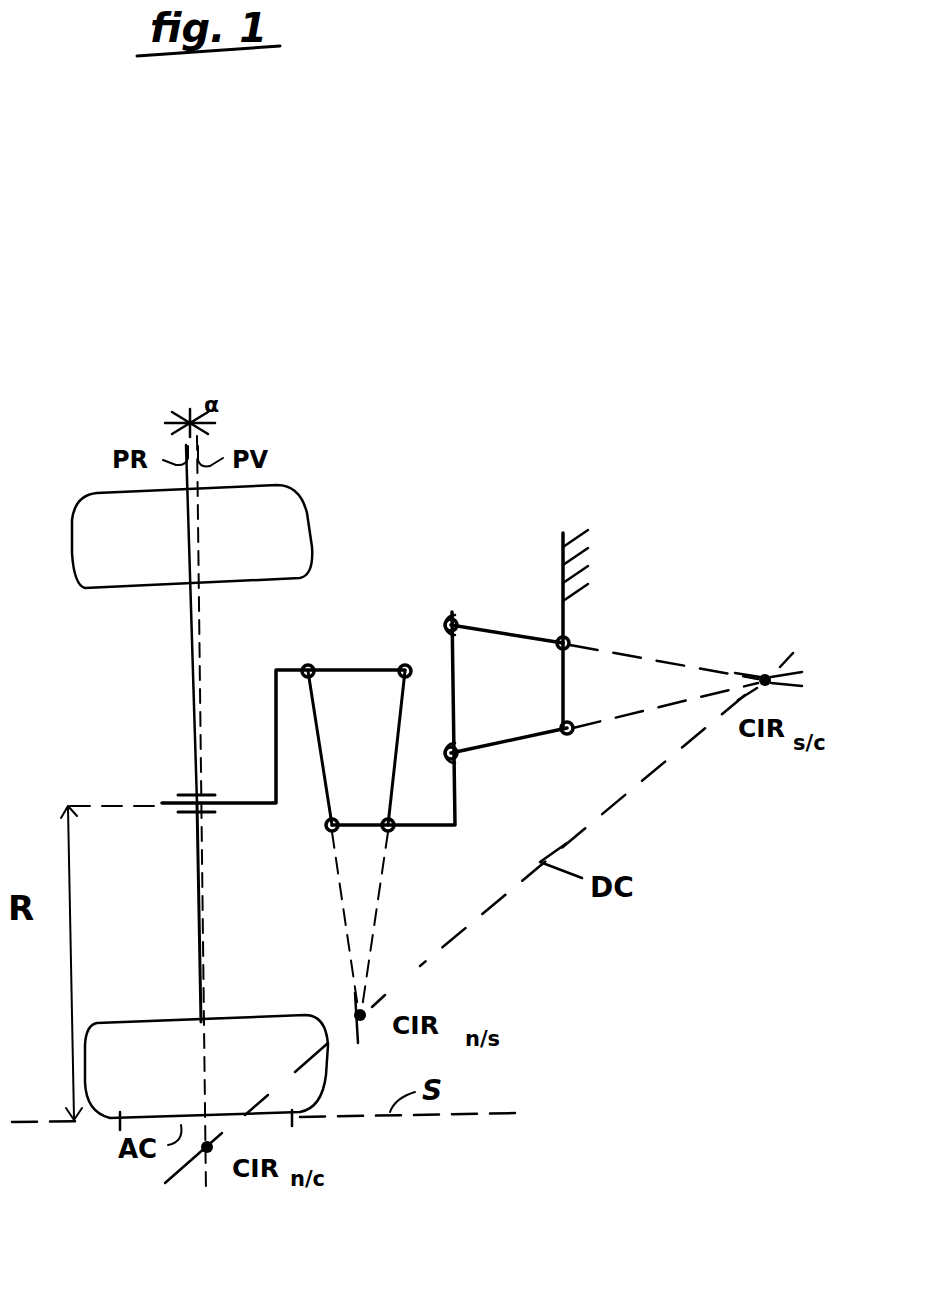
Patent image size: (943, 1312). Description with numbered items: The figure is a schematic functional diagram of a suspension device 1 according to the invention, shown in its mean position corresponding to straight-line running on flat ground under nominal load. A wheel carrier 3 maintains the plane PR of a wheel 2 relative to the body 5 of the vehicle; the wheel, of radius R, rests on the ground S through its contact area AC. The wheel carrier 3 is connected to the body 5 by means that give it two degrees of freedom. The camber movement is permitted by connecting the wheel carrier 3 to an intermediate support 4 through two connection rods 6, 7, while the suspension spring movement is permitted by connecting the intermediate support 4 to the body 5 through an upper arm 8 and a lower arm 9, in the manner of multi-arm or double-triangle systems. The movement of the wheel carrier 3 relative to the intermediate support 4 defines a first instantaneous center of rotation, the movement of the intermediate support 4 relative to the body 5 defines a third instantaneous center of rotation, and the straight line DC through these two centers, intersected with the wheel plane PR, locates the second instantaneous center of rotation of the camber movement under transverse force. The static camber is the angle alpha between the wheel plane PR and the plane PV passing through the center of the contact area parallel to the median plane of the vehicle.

The suspension device 1 is at (478, 491).
The wheel 2 is at (200, 946).
The wheel carrier 3 is at (271, 727).
The intermediate support 4 is at (449, 831).
The body 5 is at (583, 564).
The connection rod 6 is at (325, 782).
The connection rod 7 is at (392, 771).
The upper arm 8 is at (477, 625).
The lower arm 9 is at (493, 747).